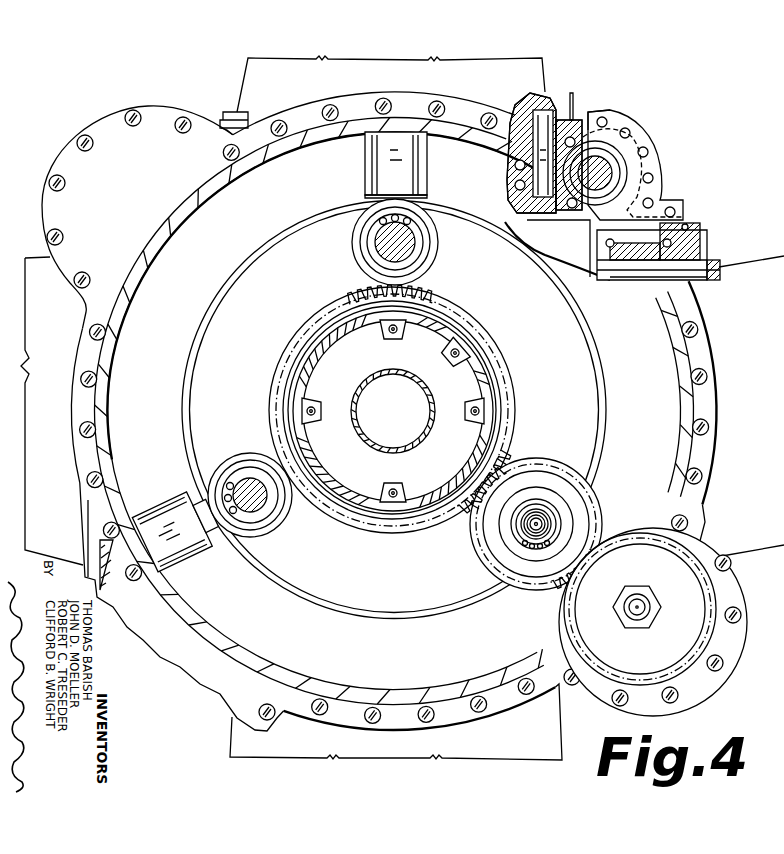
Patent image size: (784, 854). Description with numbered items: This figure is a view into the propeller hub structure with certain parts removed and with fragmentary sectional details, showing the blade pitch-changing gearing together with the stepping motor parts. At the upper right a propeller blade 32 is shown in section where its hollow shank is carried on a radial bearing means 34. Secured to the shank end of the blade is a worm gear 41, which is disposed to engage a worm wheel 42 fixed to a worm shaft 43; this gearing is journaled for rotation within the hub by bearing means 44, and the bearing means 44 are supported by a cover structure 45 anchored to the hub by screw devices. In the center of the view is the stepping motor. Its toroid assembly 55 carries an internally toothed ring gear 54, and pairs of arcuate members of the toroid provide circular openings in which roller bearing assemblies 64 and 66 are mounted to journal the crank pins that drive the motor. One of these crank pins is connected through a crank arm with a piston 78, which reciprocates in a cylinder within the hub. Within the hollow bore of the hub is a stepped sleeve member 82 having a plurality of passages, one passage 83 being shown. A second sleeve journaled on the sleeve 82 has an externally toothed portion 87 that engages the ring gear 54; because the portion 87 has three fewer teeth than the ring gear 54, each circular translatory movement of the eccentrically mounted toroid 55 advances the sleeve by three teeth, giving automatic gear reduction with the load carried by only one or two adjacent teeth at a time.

The propeller blade 32 is at (246, 71).
The radial bearing means 34 is at (517, 178).
The worm gear 41 is at (602, 118).
The worm wheel 42 is at (612, 158).
The worm shaft 43 is at (612, 177).
The bearing means 44 is at (572, 118).
The cover structure 45 is at (643, 140).
The internally toothed ring gear 54 is at (442, 320).
The toroid assembly 55 is at (258, 246).
The roller bearing assembly 64 is at (352, 241).
The roller bearing assembly 66 is at (258, 529).
The piston 78 is at (782, 632).
The stepped sleeve member 82 is at (450, 488).
The passage 83 is at (385, 338).
The externally toothed portion 87 is at (450, 340).